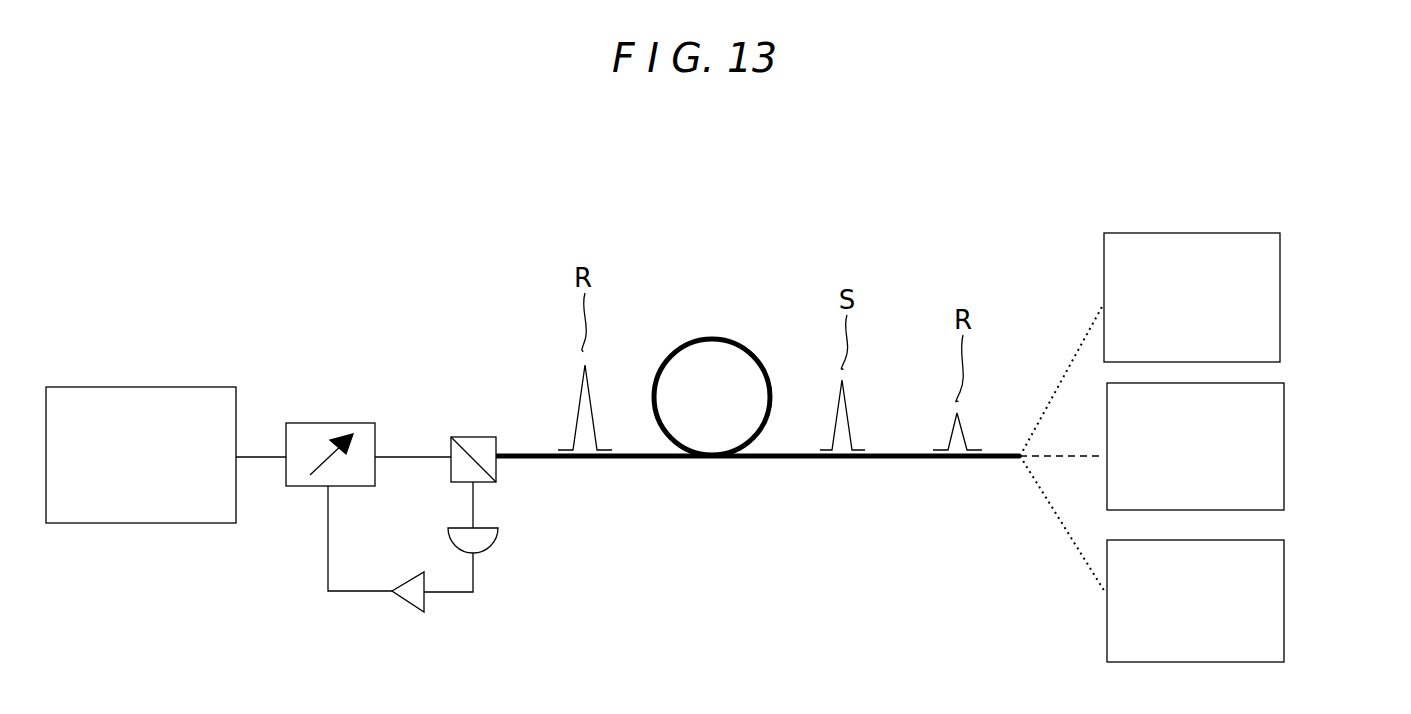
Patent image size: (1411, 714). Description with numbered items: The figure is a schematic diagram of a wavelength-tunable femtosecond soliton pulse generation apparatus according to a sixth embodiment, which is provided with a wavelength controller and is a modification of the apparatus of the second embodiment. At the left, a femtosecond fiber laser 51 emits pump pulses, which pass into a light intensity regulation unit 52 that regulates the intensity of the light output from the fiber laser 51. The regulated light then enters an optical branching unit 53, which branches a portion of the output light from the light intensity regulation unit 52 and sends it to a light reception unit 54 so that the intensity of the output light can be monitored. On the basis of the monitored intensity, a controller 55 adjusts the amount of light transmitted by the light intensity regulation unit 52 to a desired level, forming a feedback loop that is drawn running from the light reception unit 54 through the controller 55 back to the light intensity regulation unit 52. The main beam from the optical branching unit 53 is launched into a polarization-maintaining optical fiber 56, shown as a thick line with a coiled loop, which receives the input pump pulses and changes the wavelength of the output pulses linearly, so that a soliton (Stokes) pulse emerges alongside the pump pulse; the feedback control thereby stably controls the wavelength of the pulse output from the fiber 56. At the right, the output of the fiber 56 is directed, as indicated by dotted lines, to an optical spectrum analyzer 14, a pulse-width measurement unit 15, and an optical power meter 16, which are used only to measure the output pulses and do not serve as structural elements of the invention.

The femtosecond fiber laser 51 is at (148, 387).
The light intensity regulation unit 52 is at (330, 423).
The optical branching unit 53 is at (475, 437).
The light reception unit 54 is at (492, 557).
The controller 55 is at (402, 600).
The polarization-maintaining optical fiber 56 is at (910, 463).
The optical spectrum analyzer 14 is at (1281, 273).
The pulse-width measurement unit 15 is at (1284, 435).
The optical power meter 16 is at (1284, 592).